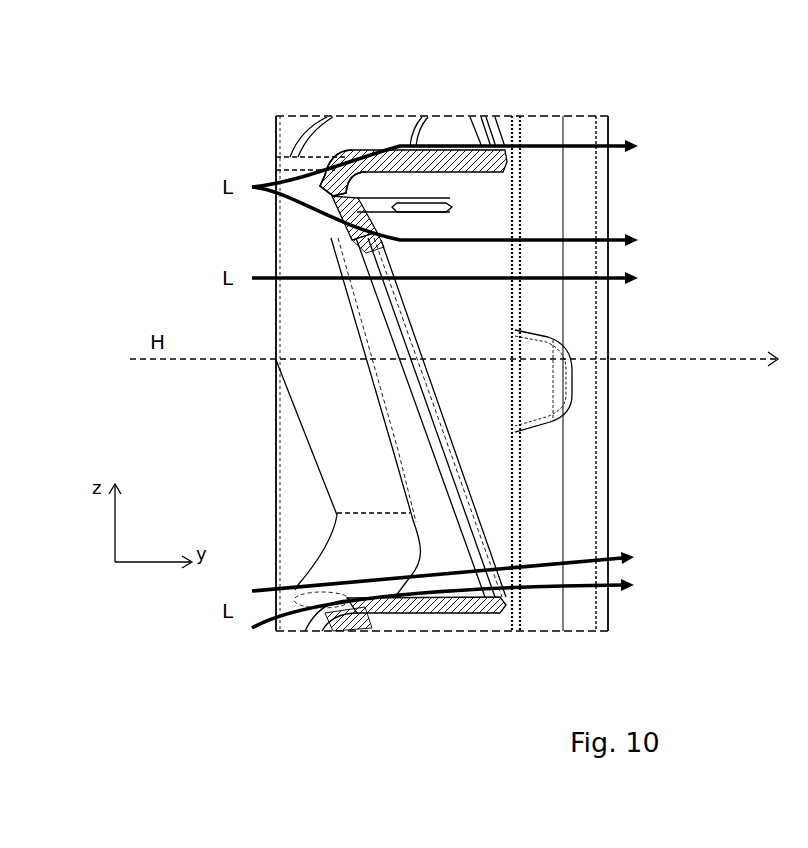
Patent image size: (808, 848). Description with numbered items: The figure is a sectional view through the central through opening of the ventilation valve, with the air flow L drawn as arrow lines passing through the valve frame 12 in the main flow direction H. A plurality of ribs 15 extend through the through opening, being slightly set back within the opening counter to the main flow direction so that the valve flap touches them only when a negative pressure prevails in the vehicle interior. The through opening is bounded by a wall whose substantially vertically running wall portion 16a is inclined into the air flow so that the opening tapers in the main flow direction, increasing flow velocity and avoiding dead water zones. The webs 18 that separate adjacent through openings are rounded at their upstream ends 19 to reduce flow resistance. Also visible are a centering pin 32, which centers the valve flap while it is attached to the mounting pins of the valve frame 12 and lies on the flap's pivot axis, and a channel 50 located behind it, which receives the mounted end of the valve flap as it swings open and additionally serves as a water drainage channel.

The valve frame 12 is at (585, 618).
The ribs 15 is at (440, 495).
The wall portion 16a is at (360, 410).
The web 18 is at (405, 162).
The upstream end 19 is at (330, 180).
The centering pin 32 is at (450, 203).
The channel 50 is at (330, 180).